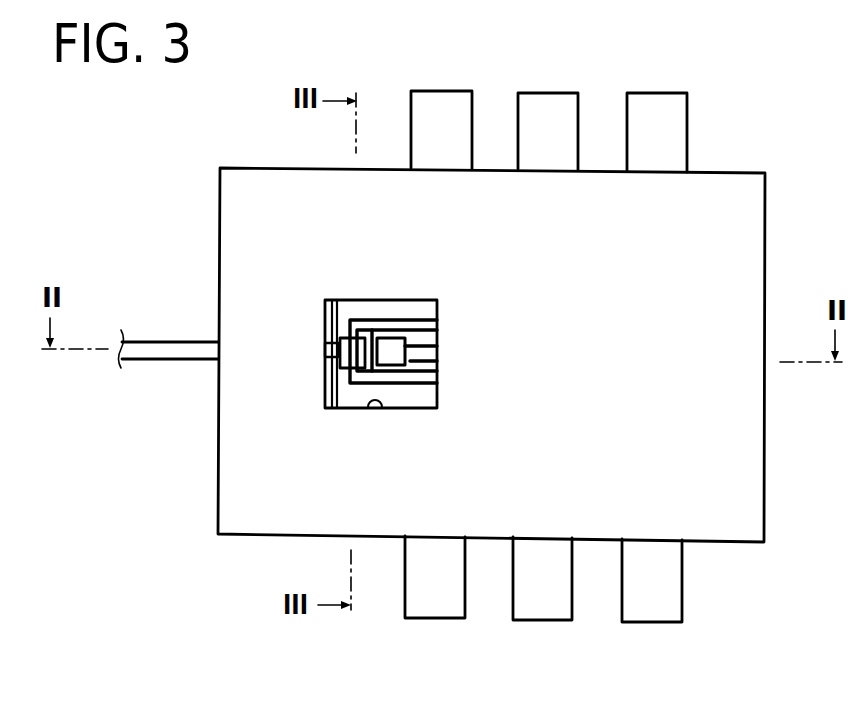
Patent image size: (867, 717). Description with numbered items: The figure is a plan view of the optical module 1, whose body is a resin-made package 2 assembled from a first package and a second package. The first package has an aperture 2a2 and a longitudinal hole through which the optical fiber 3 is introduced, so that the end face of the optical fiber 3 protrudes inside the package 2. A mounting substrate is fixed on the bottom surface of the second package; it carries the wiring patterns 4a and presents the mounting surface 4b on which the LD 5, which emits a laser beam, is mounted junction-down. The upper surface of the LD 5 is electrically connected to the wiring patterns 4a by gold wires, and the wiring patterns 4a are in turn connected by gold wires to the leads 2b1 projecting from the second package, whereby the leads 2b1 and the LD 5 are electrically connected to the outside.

The optical module 1 is at (454, 35).
The package 2 is at (735, 166).
The aperture 2a2 is at (382, 408).
The leads 2b1 is at (653, 109).
The optical fiber 3 is at (338, 351).
The wiring patterns 4a is at (436, 330).
The mounting surface 4b is at (397, 310).
The LD 5 is at (327, 336).